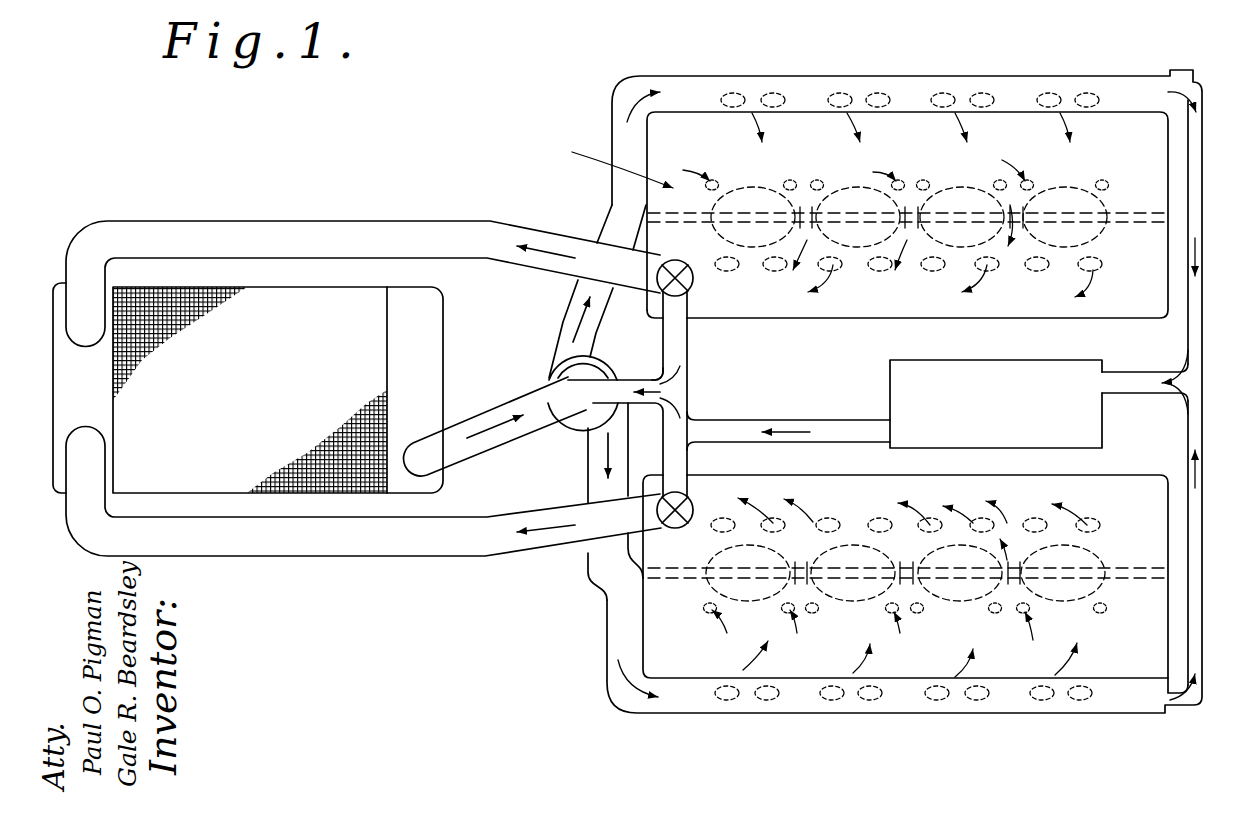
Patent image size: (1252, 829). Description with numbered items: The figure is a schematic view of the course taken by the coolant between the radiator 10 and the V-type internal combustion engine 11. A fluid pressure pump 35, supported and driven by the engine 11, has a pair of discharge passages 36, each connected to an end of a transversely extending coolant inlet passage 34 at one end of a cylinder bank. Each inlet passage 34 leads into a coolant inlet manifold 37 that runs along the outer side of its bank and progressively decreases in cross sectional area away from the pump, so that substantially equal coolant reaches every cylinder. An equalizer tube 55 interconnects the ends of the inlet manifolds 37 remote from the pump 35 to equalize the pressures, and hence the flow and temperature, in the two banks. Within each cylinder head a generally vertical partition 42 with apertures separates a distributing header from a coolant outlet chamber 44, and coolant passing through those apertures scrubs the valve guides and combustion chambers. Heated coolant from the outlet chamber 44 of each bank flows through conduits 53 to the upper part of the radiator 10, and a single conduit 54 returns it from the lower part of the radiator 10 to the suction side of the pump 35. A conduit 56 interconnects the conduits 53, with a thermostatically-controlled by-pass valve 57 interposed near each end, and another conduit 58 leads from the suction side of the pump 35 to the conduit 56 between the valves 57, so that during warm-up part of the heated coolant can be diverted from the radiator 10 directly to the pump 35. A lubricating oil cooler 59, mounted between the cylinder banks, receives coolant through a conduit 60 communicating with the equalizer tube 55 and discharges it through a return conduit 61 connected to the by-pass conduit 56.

The radiator 10 is at (290, 356).
The V-type internal combustion engine 11 is at (605, 160).
The coolant inlet passage 34 is at (620, 130).
The fluid pressure pump 35 is at (560, 370).
The discharge passage 36 is at (605, 228).
The coolant inlet manifold 37 is at (910, 76).
The partition 42 is at (1140, 213).
The coolant outlet chamber 44 is at (1120, 277).
The conduit 53 is at (350, 232).
The conduit 54 is at (475, 425).
The equalizer tube 55 is at (1195, 464).
The conduit 56 is at (687, 350).
The thermostatically-controlled by-pass valve 57 is at (690, 254).
The conduit 58 is at (637, 385).
The lubricating oil cooler 59 is at (890, 374).
The conduit 60 is at (1142, 383).
The return conduit 61 is at (820, 420).